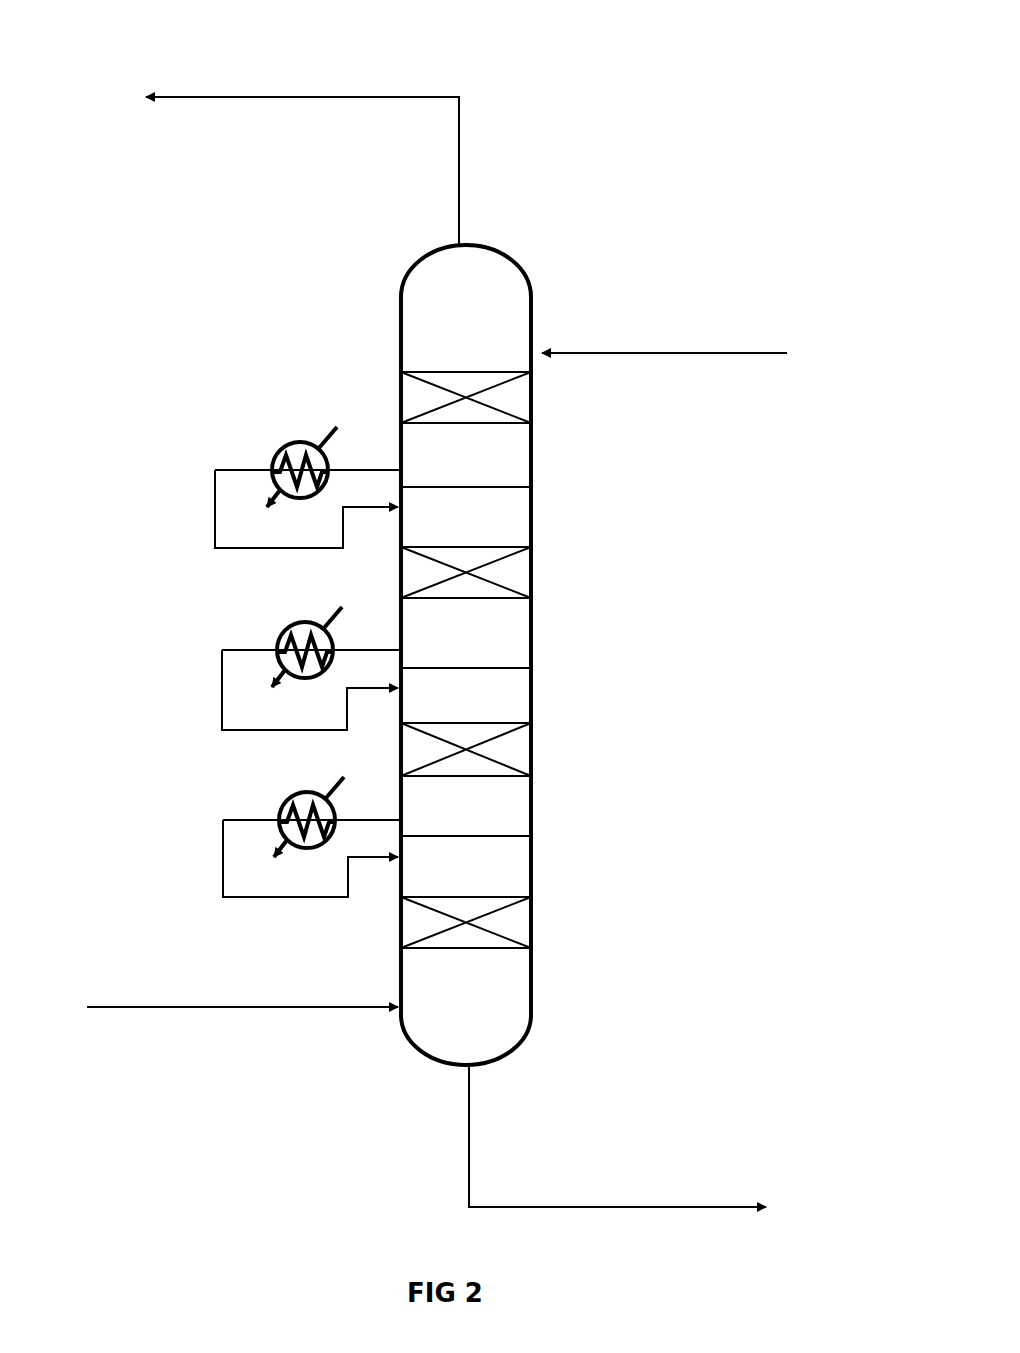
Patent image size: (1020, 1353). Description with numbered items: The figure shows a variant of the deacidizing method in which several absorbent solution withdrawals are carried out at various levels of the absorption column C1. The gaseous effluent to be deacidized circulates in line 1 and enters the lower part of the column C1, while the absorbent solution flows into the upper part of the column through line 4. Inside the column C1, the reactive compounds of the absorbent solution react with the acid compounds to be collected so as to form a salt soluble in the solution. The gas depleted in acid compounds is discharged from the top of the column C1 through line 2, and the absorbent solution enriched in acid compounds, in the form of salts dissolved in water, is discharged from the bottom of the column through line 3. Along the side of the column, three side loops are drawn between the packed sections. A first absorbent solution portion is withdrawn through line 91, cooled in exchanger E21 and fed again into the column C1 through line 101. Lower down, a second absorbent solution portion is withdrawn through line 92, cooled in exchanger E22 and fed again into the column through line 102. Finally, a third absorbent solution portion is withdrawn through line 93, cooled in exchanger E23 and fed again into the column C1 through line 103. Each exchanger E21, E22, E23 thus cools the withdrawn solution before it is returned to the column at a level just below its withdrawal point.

The line 1 is at (218, 1005).
The line 2 is at (256, 95).
The line 3 is at (625, 1205).
The line 4 is at (602, 350).
The line 91 is at (362, 466).
The line 92 is at (368, 645).
The line 93 is at (370, 815).
The line 101 is at (213, 505).
The line 102 is at (220, 690).
The line 103 is at (221, 862).
The exchanger E21 is at (297, 442).
The exchanger E22 is at (285, 624).
The exchanger E23 is at (283, 796).
The absorption column C1 is at (533, 642).